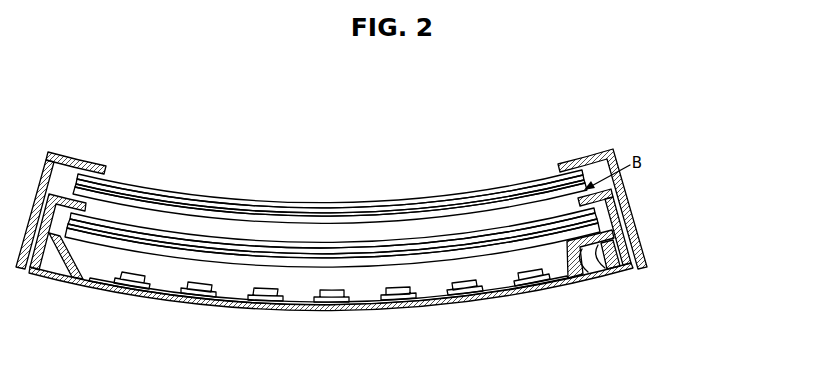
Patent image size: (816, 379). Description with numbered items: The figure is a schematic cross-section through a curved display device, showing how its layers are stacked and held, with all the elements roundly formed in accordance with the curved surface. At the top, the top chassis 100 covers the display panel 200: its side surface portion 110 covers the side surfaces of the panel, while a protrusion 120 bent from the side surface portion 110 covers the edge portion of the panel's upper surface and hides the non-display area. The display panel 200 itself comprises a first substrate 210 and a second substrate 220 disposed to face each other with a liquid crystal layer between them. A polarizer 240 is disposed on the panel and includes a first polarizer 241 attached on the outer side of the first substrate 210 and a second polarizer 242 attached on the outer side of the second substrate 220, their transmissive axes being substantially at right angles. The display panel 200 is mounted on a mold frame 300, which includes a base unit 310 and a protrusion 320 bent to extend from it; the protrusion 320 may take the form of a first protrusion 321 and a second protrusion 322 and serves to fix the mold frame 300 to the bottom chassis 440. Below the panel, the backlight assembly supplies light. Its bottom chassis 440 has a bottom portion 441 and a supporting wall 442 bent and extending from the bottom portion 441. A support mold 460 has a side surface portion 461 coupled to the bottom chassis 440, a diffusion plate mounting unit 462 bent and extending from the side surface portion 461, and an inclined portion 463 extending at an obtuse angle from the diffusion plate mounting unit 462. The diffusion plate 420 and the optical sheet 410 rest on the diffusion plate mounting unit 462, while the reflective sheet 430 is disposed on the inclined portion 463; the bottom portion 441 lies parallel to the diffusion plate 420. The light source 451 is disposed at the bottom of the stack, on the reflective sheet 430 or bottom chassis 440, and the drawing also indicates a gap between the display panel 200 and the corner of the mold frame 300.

The top chassis 100 is at (78, 108).
The side surface portion 110 is at (37, 193).
The protrusion 120 is at (80, 162).
The display panel 200 is at (240, 138).
The first substrate 210 is at (233, 212).
The second substrate 220 is at (191, 200).
The polarizer 240 is at (310, 138).
The first polarizer 241 is at (355, 224).
The second polarizer 242 is at (311, 204).
The mold frame 300 is at (744, 182).
The base unit 310 is at (618, 164).
The protrusion 320 is at (694, 197).
The first protrusion 321 is at (628, 237).
The second protrusion 322 is at (612, 206).
The optical sheet 410 is at (457, 248).
The diffusion plate 420 is at (367, 263).
The reflective sheet 430 is at (258, 301).
The bottom chassis 440 is at (75, 344).
The bottom portion 441 is at (70, 282).
The supporting wall 442 is at (31, 258).
The light source 451 is at (331, 293).
The support mold 460 is at (563, 344).
The side surface portion 461 is at (610, 260).
The diffusion plate mounting unit 462 is at (597, 243).
The inclined portion 463 is at (578, 258).